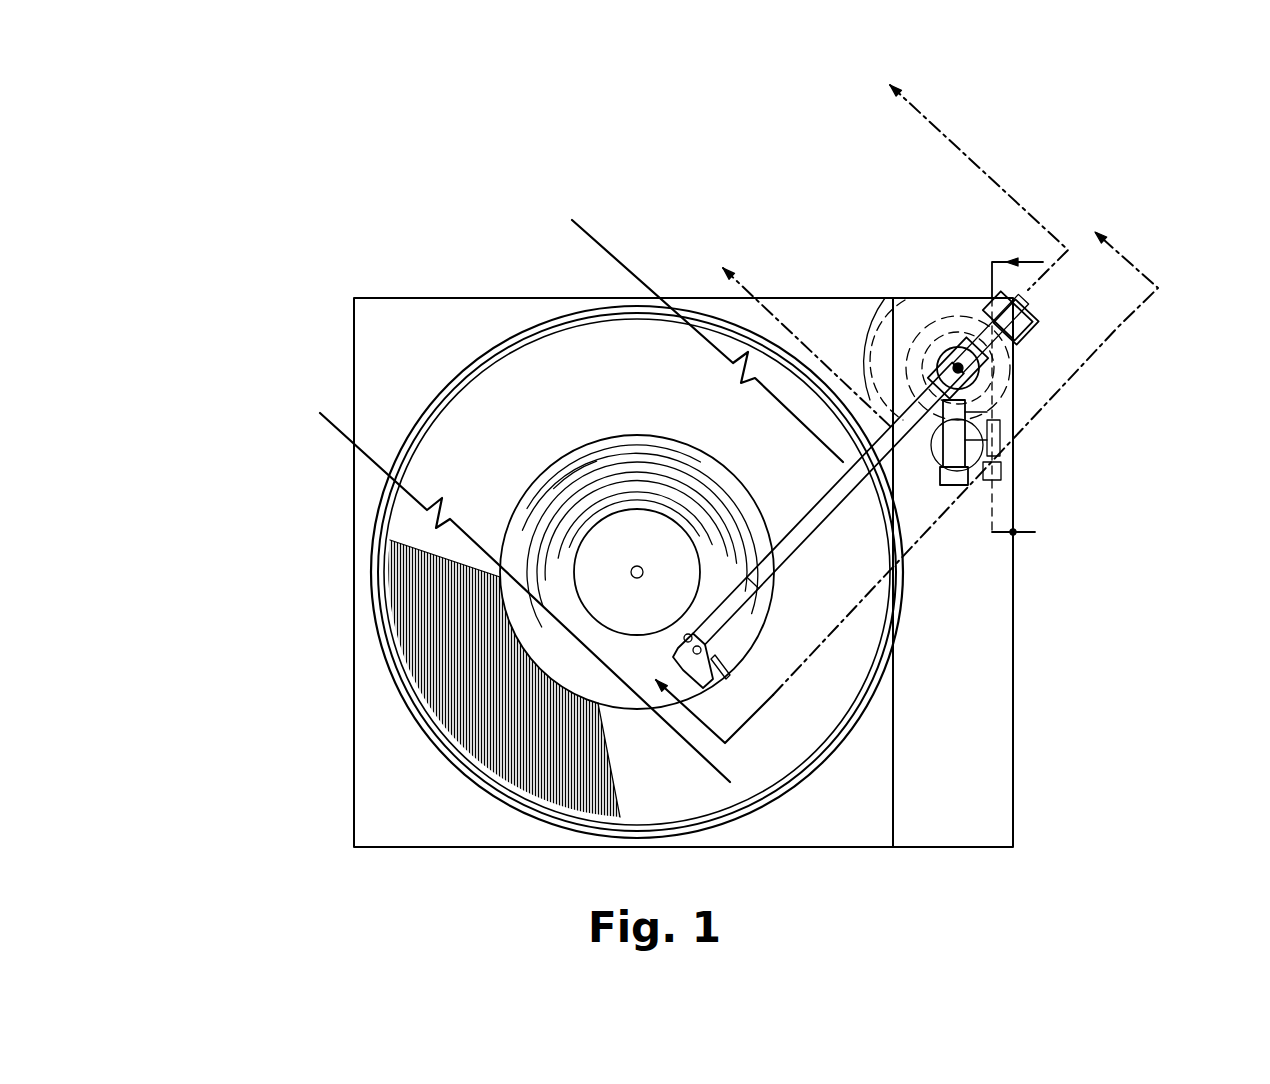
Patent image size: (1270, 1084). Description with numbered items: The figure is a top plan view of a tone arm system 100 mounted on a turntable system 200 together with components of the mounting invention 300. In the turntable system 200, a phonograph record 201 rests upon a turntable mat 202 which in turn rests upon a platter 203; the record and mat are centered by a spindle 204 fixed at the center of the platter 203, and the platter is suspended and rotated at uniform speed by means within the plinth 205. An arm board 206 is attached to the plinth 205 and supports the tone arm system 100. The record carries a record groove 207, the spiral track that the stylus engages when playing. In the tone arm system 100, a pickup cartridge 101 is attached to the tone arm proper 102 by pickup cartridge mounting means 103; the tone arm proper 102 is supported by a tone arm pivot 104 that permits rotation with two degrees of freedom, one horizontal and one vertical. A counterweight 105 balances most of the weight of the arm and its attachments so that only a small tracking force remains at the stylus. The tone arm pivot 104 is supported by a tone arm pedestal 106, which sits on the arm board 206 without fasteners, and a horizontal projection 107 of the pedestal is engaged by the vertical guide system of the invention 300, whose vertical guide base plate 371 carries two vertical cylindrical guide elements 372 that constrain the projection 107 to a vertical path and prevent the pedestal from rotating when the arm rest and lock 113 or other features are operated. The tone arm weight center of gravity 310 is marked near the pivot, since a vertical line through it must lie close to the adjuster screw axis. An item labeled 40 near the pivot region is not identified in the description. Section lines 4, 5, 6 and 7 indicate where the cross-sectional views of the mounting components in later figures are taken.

The section line 4 is at (536, 589).
The section line 5 is at (965, 449).
The section line 6 is at (706, 330).
The section line 7 is at (954, 304).
The arm rest 40 is at (893, 300).
The tone arm system 100 is at (1140, 196).
The pickup cartridge 101 is at (690, 655).
The tone arm proper 102 is at (823, 496).
The pickup cartridge mounting means 103 is at (692, 630).
The tone arm pivot 104 is at (946, 298).
The counterweight 105 is at (976, 298).
The tone arm pedestal 106 is at (1027, 343).
The horizontal projection 107 is at (1000, 462).
The arm rest and lock 113 is at (1000, 482).
The turntable system 200 is at (298, 587).
The phonograph record 201 is at (638, 395).
The turntable mat 202 is at (432, 721).
The platter 203 is at (433, 741).
The spindle 204 is at (637, 566).
The plinth 205 is at (360, 652).
The arm board 206 is at (990, 765).
The record groove 207 is at (565, 478).
The invention 300 is at (1035, 402).
The tone arm weight center of gravity 310 is at (900, 362).
The vertical guide base plate 371 is at (1000, 448).
The vertical guide elements 372 is at (1000, 425).